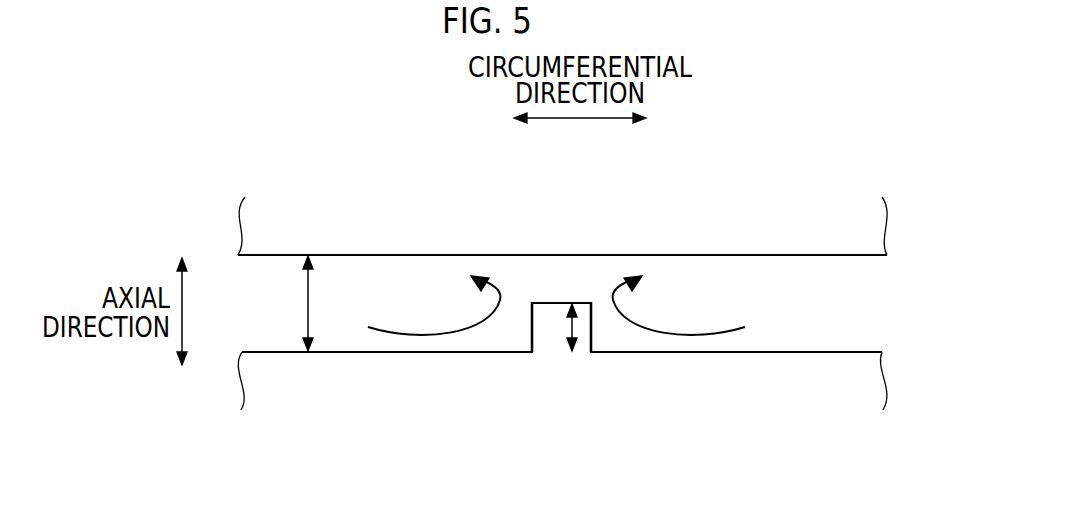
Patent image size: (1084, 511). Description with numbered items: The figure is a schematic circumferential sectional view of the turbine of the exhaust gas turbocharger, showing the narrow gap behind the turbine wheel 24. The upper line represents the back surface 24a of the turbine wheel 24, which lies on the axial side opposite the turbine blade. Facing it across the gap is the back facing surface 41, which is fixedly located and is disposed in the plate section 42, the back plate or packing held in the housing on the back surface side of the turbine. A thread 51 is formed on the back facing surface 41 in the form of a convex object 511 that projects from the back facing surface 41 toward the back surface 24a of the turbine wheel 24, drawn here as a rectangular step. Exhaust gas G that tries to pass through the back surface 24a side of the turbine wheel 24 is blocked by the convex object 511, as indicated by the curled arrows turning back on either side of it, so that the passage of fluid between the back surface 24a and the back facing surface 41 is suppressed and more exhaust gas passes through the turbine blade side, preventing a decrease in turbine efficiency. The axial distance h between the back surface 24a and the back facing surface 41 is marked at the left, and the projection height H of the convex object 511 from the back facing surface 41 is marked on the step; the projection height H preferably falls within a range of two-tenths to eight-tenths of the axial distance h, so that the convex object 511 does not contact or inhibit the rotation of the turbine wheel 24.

The turbine wheel 24 is at (860, 220).
The back surface 24a is at (858, 256).
The back facing surface 41 is at (857, 351).
The plate section 42 is at (860, 386).
The convex object 511 is at (512, 353).
The thread 51 is at (538, 384).
The axial distance h is at (306, 305).
The projection height H is at (567, 332).
The exhaust gas G is at (450, 340).